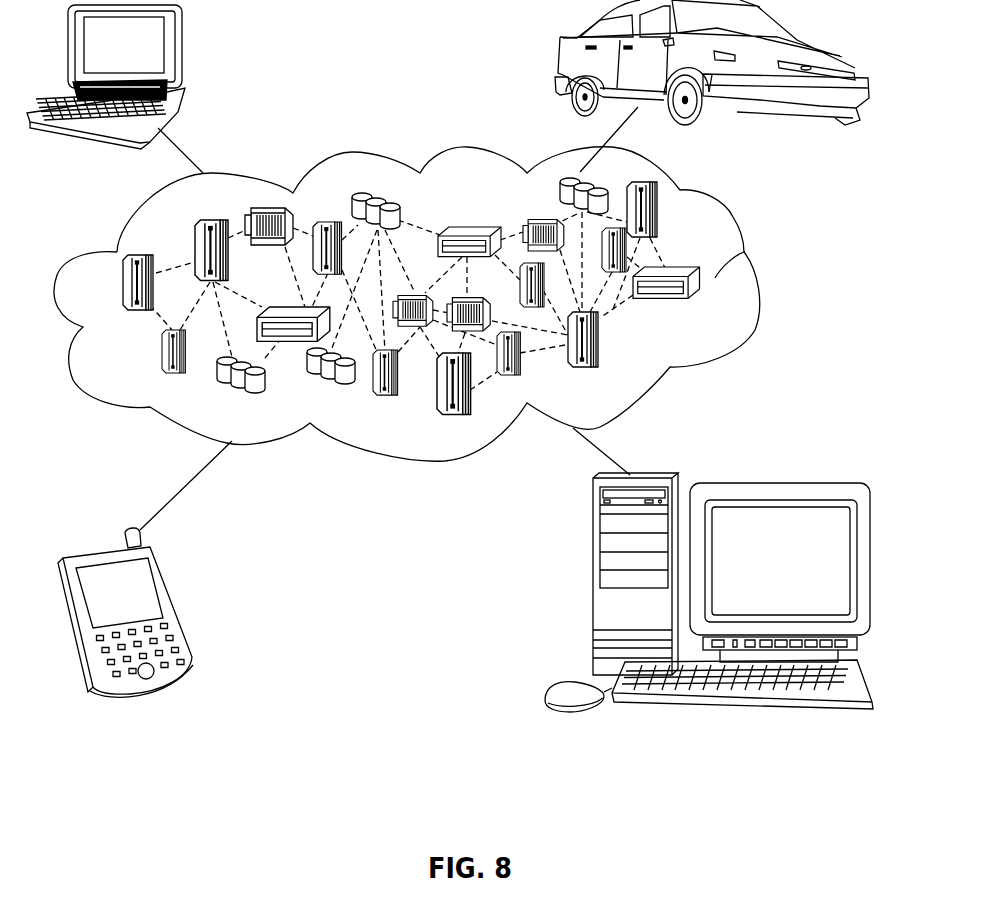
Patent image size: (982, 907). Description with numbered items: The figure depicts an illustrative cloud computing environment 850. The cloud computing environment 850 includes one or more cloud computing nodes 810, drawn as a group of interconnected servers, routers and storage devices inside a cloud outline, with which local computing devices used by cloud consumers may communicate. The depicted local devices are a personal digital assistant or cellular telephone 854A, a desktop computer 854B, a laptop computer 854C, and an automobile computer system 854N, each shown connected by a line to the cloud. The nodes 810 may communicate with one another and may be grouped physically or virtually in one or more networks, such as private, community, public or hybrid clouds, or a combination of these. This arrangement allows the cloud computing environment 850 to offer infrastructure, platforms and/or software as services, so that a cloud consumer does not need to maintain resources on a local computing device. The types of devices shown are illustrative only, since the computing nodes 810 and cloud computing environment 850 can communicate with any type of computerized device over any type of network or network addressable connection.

The personal digital assistant or cellular telephone 854A is at (173, 603).
The desktop computer 854B is at (593, 582).
The laptop computer 854C is at (182, 50).
The automobile computer system 854N is at (560, 53).
The cloud computing environment 850 is at (742, 240).
The cloud computing nodes 810 is at (720, 302).